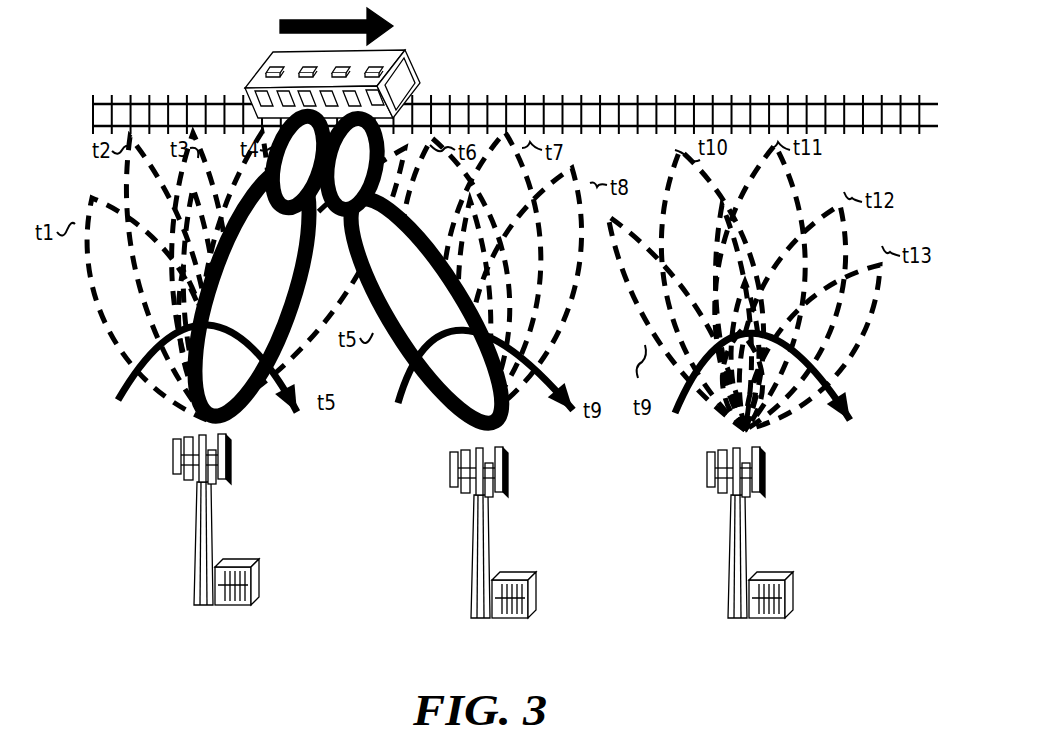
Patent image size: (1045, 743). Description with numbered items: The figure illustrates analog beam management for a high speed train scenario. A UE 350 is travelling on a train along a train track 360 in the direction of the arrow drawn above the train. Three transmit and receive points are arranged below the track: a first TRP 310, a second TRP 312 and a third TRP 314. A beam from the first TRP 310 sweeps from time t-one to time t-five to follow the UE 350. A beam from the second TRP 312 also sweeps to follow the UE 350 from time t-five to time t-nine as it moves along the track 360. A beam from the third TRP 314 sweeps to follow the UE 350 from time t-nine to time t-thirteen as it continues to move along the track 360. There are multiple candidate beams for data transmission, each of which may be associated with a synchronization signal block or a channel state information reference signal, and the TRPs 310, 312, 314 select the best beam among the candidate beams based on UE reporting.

The first transmit and receive point (TRP) 310 is at (200, 596).
The second TRP 312 is at (472, 606).
The third TRP 314 is at (737, 606).
The UE 350 is at (406, 62).
The train track 360 is at (824, 96).